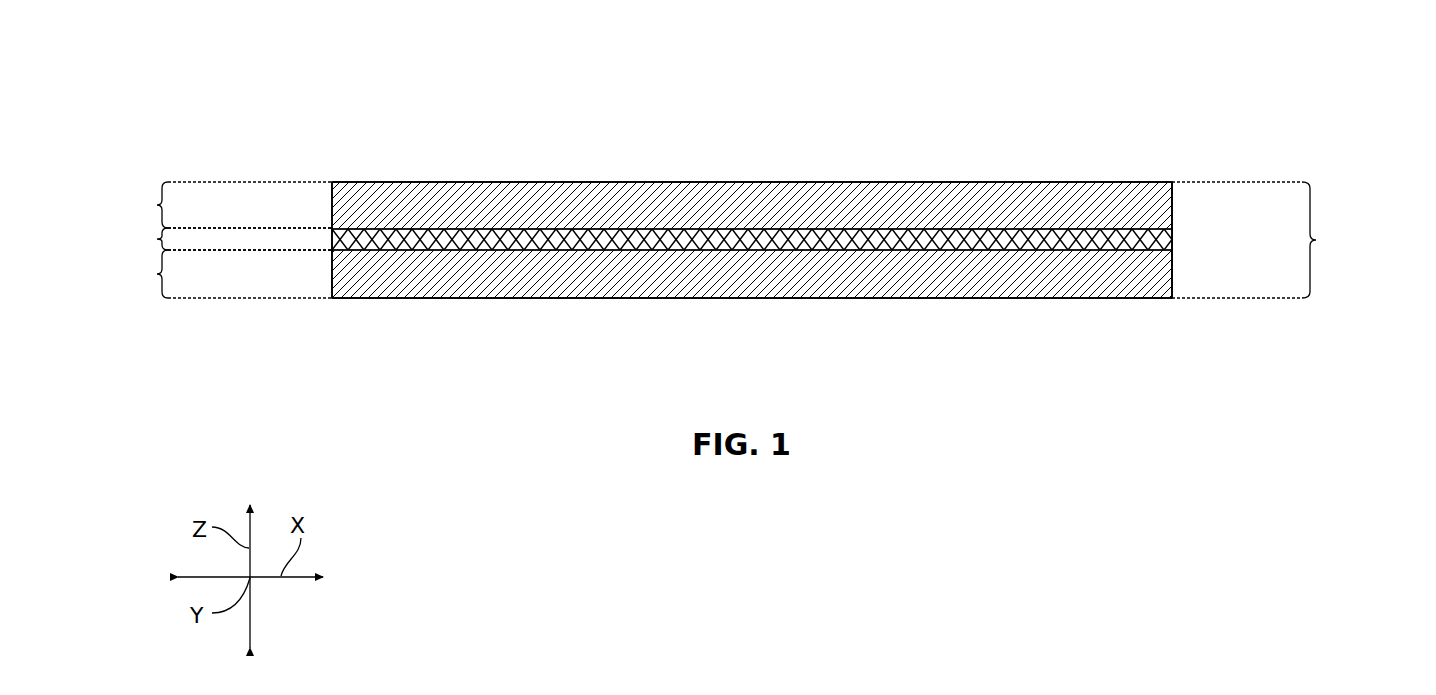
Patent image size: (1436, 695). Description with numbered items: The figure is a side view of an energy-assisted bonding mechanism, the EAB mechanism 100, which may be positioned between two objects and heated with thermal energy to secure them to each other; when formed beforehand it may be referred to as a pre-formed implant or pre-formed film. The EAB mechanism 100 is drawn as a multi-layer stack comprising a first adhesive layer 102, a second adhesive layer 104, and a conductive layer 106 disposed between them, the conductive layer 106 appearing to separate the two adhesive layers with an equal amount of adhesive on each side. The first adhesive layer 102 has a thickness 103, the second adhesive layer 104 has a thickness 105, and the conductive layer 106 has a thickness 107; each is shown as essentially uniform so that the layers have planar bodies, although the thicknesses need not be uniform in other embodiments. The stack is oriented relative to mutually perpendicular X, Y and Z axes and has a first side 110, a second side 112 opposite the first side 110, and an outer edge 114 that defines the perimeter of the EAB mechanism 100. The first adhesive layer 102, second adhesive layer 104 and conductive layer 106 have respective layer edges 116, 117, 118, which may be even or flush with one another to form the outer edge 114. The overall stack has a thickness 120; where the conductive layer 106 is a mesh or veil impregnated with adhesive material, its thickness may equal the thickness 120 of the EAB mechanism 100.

The EAB mechanism 100 is at (1103, 60).
The first adhesive layer 102 is at (332, 187).
The thickness 103 is at (1172, 205).
The second adhesive layer 104 is at (332, 277).
The thickness 105 is at (1172, 273).
The conductive layer 106 is at (332, 238).
The thickness 107 is at (1172, 238).
The first side 110 is at (798, 180).
The second side 112 is at (790, 300).
The outer edge 114 is at (332, 205).
The layer edge 116 is at (157, 205).
The layer edge 117 is at (157, 274).
The layer edge 118 is at (157, 239).
The thickness 120 is at (1316, 240).